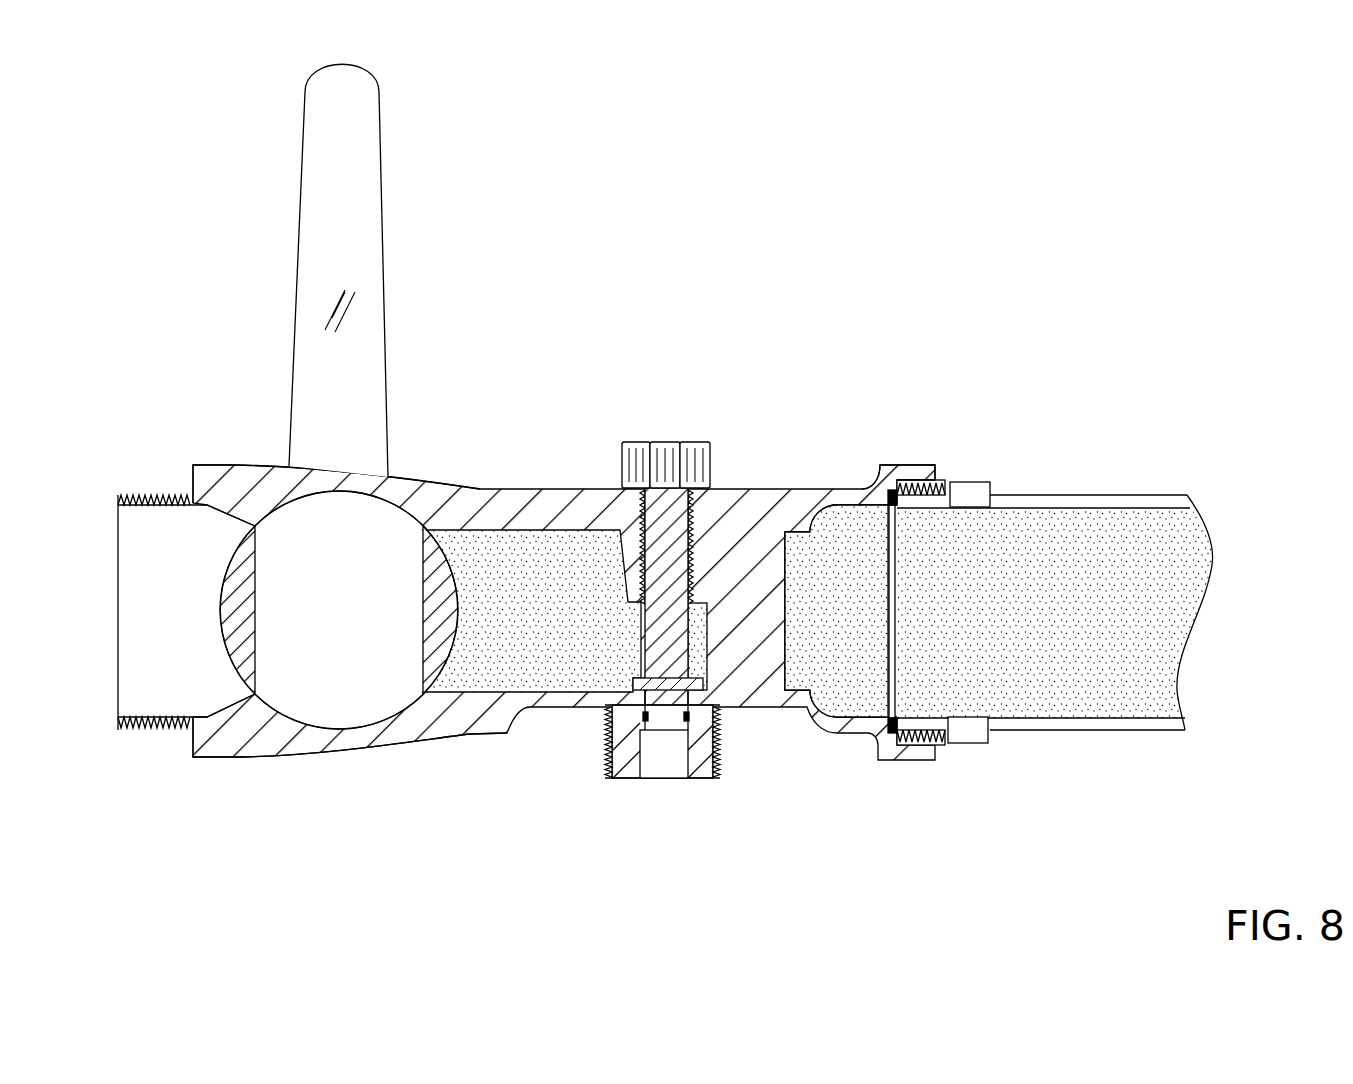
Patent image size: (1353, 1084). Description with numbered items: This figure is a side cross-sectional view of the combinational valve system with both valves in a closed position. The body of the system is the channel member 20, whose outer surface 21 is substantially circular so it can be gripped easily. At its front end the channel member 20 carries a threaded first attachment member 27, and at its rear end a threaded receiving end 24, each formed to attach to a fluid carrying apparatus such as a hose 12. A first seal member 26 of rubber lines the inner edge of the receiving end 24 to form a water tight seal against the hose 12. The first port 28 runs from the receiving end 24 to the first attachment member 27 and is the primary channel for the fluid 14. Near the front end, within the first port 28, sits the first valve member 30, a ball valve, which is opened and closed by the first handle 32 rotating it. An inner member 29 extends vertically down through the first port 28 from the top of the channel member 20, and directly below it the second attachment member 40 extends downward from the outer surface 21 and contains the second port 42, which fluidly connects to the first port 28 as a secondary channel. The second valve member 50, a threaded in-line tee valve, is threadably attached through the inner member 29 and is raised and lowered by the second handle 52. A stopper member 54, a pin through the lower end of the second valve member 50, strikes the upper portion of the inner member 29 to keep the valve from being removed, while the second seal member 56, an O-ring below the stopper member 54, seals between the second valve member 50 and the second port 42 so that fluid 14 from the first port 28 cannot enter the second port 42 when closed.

The hose 12 is at (1107, 495).
The fluid 14 is at (1153, 678).
The channel member 20 is at (807, 490).
The outer surface 21 is at (352, 747).
The receiving end 24 is at (928, 752).
The first seal member 26 is at (887, 740).
The first attachment member 27 is at (140, 730).
The first port 28 is at (848, 503).
The inner member 29 is at (742, 558).
The first valve member 30 is at (243, 570).
The first handle 32 is at (360, 125).
The second attachment member 40 is at (610, 763).
The second port 42 is at (650, 779).
The second valve member 50 is at (652, 510).
The second handle 52 is at (637, 443).
The stopper member 54 is at (635, 687).
The second seal member 56 is at (688, 720).